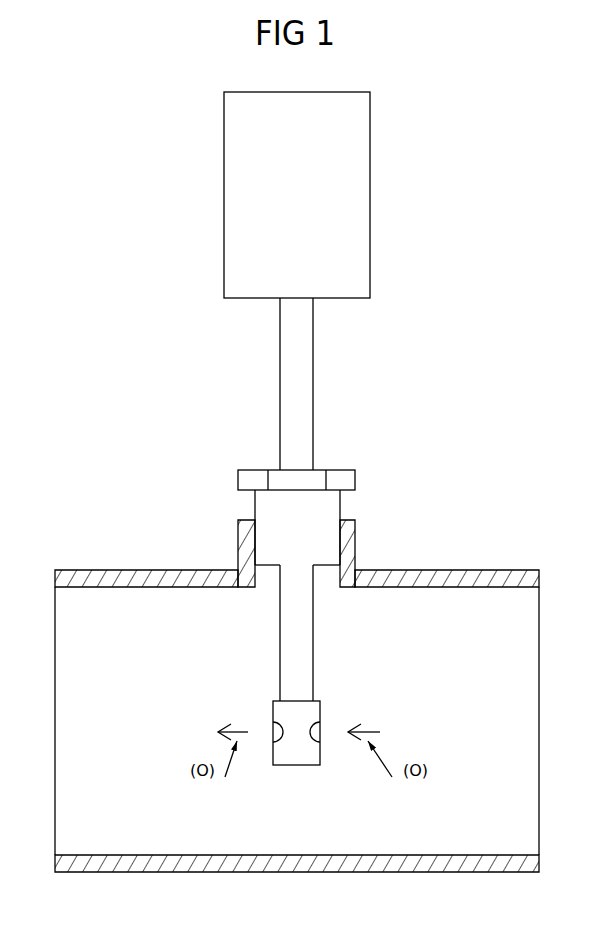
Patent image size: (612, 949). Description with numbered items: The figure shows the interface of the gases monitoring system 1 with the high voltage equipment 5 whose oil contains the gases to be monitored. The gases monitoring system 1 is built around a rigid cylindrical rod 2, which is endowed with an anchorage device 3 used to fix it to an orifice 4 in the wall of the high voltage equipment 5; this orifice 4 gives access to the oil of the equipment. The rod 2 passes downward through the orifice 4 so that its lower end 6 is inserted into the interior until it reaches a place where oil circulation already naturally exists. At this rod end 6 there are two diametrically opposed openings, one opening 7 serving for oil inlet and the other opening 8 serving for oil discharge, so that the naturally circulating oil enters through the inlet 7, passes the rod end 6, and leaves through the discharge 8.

The gases monitoring system 1 is at (180, 272).
The rigid cylindrical rod 2 is at (316, 388).
The anchorage device 3 is at (358, 477).
The orifice 4 is at (358, 543).
The high voltage equipment 5 is at (472, 567).
The lower end of the rod 6 is at (288, 767).
The oil inlet opening 7 is at (322, 730).
The oil discharge opening 8 is at (272, 730).